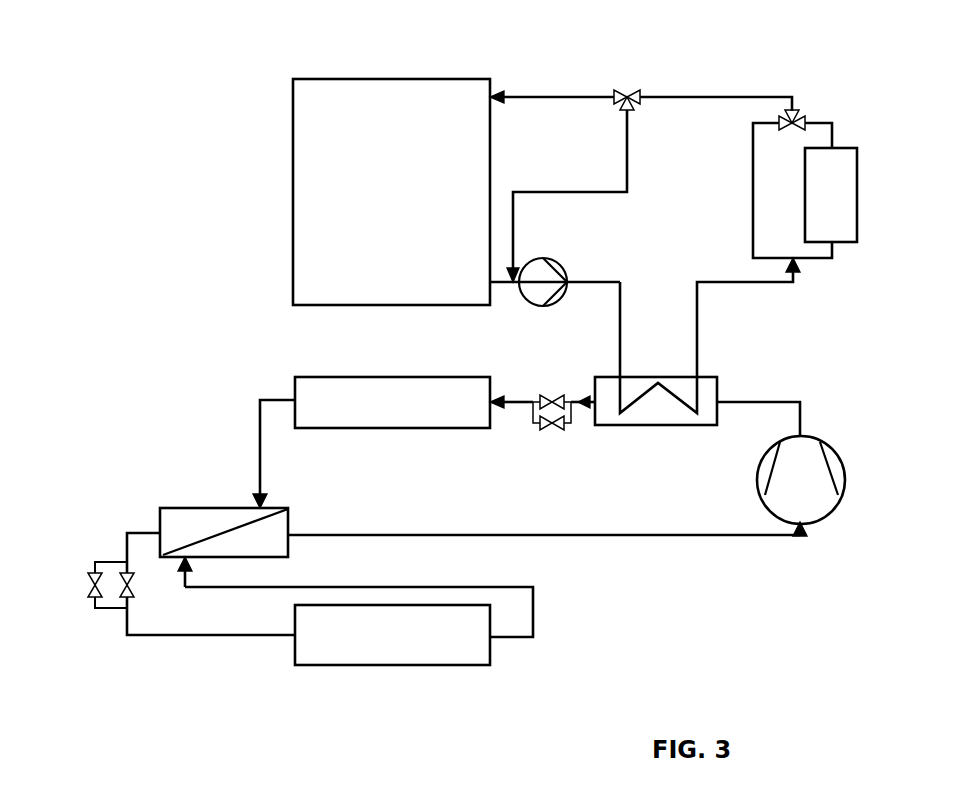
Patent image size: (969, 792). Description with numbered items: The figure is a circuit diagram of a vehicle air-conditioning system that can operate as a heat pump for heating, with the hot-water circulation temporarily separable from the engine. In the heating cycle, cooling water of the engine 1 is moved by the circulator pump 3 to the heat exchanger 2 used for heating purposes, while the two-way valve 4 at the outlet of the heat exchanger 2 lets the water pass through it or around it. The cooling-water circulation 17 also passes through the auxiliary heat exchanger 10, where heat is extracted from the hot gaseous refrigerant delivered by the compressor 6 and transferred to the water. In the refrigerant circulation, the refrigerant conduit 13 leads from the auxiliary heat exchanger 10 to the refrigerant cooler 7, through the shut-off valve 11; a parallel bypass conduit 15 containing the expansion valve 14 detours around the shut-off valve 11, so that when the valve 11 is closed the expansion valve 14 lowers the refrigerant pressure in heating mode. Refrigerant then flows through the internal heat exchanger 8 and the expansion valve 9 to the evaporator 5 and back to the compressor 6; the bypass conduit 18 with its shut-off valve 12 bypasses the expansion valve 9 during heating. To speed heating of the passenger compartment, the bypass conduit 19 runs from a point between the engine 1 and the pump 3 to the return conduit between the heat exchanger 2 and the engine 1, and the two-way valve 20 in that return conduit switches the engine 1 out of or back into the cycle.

The engine 1 is at (376, 172).
The heat exchanger 2 is at (841, 204).
The circulator pump 3 is at (572, 258).
The two-way valve 4 is at (816, 120).
The evaporator 5 is at (361, 647).
The compressor 6 is at (806, 497).
The refrigerant cooler 7 is at (361, 417).
The internal heat exchanger 8 is at (185, 542).
The expansion valve 9 is at (136, 576).
The auxiliary heat exchanger 10 is at (697, 341).
The shut-off valve 11 is at (558, 394).
The shut-off valve 12 is at (90, 600).
The refrigerant conduit 13 is at (260, 465).
The expansion valve 14 is at (558, 433).
The bypass conduit 15 is at (533, 412).
The cooling-water circulation 17 is at (697, 333).
The bypass conduit 18 is at (108, 561).
The bypass conduit 19 is at (627, 168).
The two-way valve 20 is at (636, 88).